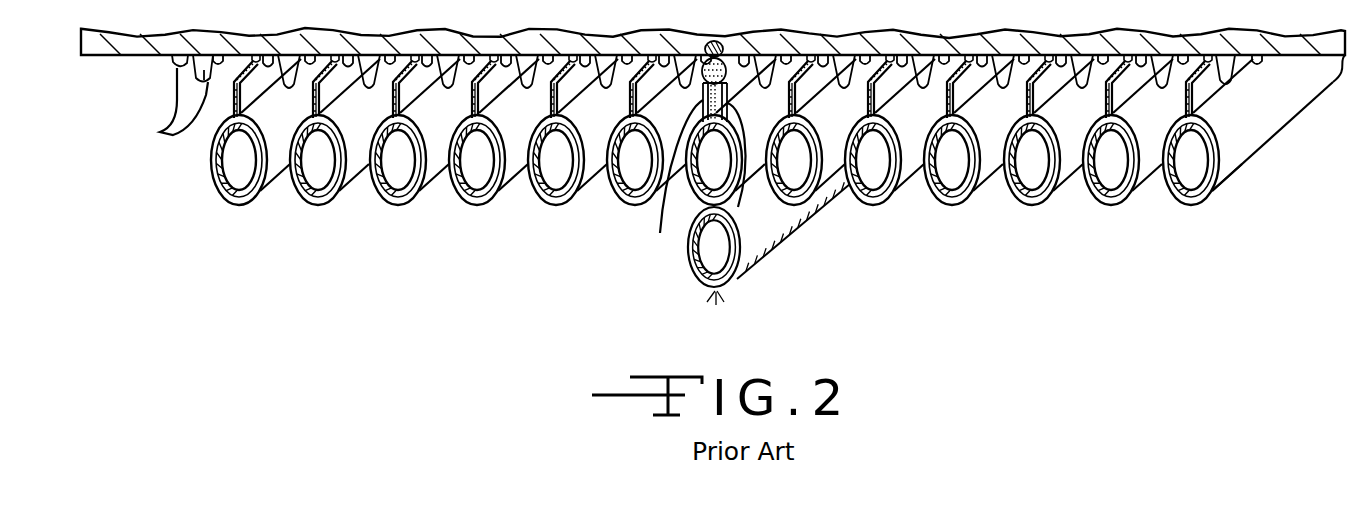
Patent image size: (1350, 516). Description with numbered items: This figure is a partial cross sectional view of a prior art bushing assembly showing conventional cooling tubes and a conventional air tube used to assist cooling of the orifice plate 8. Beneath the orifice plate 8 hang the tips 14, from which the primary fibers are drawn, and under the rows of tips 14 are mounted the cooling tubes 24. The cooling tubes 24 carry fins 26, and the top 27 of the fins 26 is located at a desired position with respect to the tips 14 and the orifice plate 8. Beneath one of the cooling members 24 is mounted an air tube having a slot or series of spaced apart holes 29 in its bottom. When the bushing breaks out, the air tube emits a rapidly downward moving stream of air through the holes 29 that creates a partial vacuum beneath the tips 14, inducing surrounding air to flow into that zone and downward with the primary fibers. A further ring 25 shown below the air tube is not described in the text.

The orifice plate 8 is at (111, 44).
The tips 14 is at (172, 100).
The cooling tubes 24 is at (243, 204).
The ring 25 is at (706, 222).
The fins 26 is at (490, 88).
The top 27 is at (472, 72).
The holes 29 is at (723, 287).